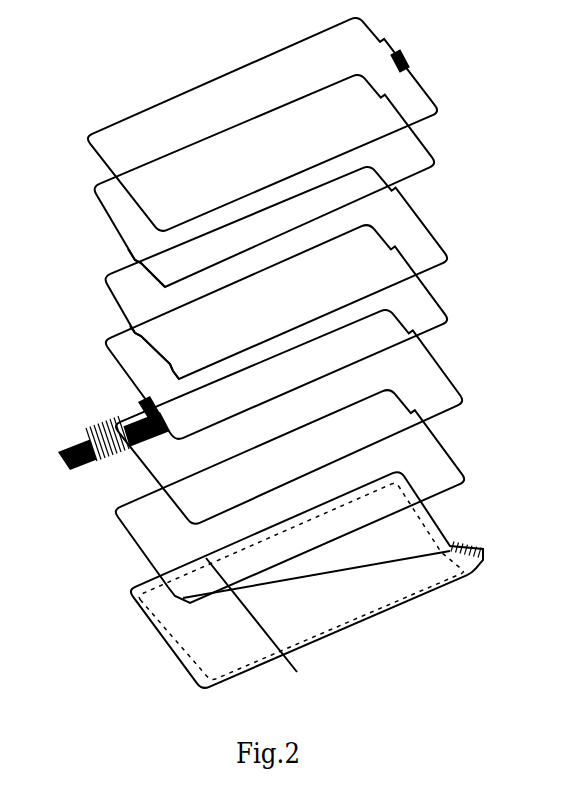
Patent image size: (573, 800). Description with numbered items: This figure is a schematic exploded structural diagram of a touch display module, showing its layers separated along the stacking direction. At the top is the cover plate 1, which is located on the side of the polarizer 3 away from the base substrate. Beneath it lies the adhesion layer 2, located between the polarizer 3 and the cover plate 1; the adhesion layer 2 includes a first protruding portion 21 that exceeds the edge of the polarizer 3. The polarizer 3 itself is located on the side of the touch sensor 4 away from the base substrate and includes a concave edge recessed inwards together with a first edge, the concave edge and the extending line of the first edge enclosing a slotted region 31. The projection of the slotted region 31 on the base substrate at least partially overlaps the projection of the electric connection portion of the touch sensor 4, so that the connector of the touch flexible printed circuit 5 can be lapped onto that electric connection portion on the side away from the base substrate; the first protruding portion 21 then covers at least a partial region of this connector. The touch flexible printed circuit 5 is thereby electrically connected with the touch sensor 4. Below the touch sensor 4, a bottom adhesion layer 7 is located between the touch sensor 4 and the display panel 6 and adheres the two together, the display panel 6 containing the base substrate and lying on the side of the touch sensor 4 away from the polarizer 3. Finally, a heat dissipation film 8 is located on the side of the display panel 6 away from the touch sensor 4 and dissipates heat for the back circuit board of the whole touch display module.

The cover plate 1 is at (434, 64).
The adhesion layer 2 is at (442, 144).
The first protruding portion 21 is at (130, 254).
The polarizer 3 is at (454, 237).
The slotted region 31 is at (142, 344).
The touch sensor 4 is at (458, 298).
The touch flexible printed circuit 5 is at (77, 427).
The bottom adhesion layer 7 is at (472, 381).
The display panel 6 is at (472, 463).
The heat dissipation film 8 is at (460, 537).